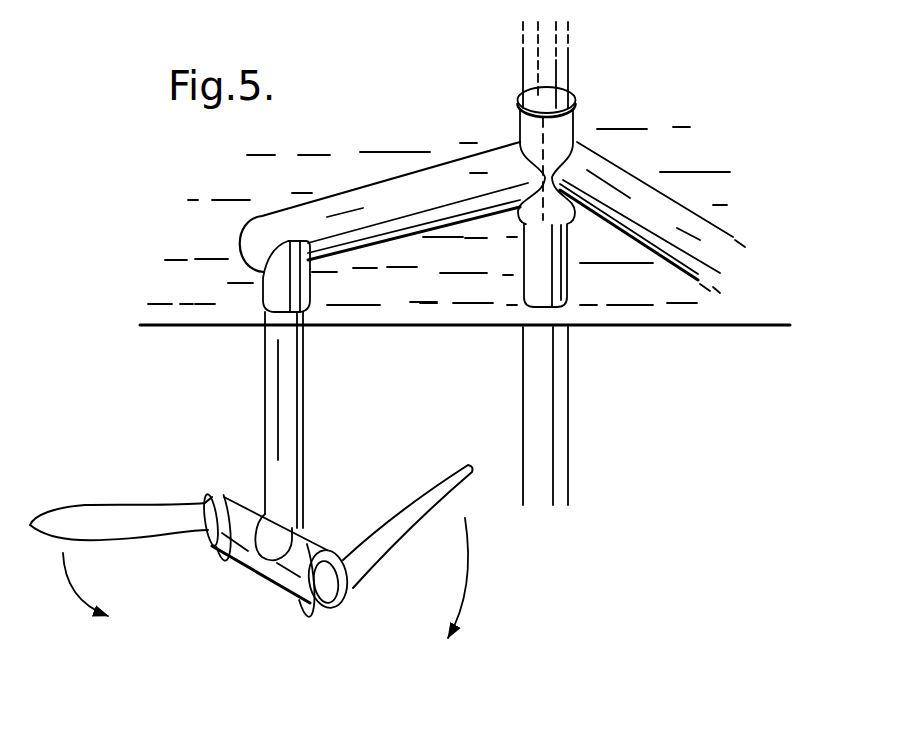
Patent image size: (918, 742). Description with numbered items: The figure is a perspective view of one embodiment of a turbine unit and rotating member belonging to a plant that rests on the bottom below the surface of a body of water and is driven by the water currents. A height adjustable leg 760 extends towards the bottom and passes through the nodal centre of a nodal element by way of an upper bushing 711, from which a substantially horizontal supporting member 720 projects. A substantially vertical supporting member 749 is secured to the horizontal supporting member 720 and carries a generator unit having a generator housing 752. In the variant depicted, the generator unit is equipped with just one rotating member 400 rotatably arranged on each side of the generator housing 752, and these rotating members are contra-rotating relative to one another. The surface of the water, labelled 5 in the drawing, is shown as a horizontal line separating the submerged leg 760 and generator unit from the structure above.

The height adjustable leg 760 is at (522, 68).
The upper bushing 711 is at (577, 127).
The horizontal supporting member 720 is at (383, 192).
The vertical supporting member 749 is at (207, 453).
The generator housing 752 is at (250, 573).
The rotating member 400 is at (426, 486).
The water surface 5 is at (127, 362).